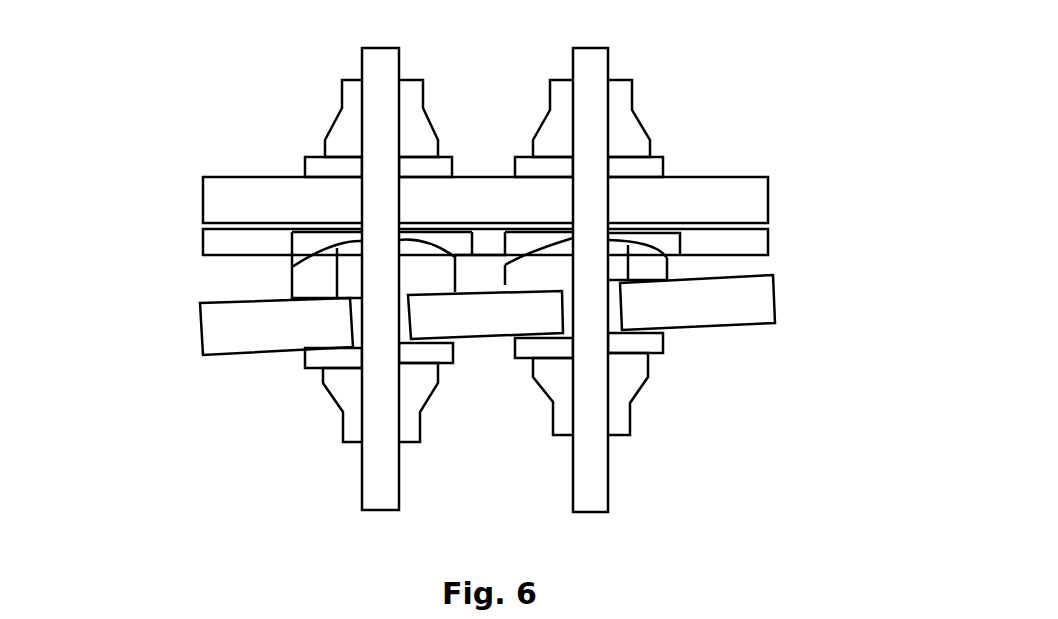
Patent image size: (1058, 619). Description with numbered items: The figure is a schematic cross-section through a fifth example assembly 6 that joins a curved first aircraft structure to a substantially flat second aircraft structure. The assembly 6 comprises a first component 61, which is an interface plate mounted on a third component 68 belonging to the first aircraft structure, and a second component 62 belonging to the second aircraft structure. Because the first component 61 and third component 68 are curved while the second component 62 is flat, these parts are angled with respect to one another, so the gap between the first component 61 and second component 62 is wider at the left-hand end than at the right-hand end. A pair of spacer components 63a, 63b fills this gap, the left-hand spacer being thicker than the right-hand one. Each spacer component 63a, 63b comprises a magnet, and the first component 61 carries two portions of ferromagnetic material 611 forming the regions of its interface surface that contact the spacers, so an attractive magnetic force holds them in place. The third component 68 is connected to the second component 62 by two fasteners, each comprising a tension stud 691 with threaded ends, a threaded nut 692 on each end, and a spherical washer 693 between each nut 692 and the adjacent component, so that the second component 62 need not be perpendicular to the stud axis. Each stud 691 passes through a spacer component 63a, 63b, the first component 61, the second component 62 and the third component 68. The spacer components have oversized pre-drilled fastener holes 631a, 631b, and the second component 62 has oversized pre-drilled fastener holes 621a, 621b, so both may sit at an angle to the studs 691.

The assembly 6 is at (122, 75).
The first component 61 is at (750, 250).
The portions of ferromagnetic material 611 is at (515, 242).
The second component 62 is at (498, 331).
The fastener hole 621a is at (353, 320).
The fastener hole 621b is at (615, 315).
The spacer component 63a is at (291, 278).
The spacer component 63b is at (668, 262).
The fastener hole 631a is at (348, 260).
The fastener hole 631b is at (618, 258).
The third component 68 is at (750, 216).
The tension stud 691 is at (362, 465).
The threaded nut 692 is at (348, 133).
The washer 693 is at (323, 168).